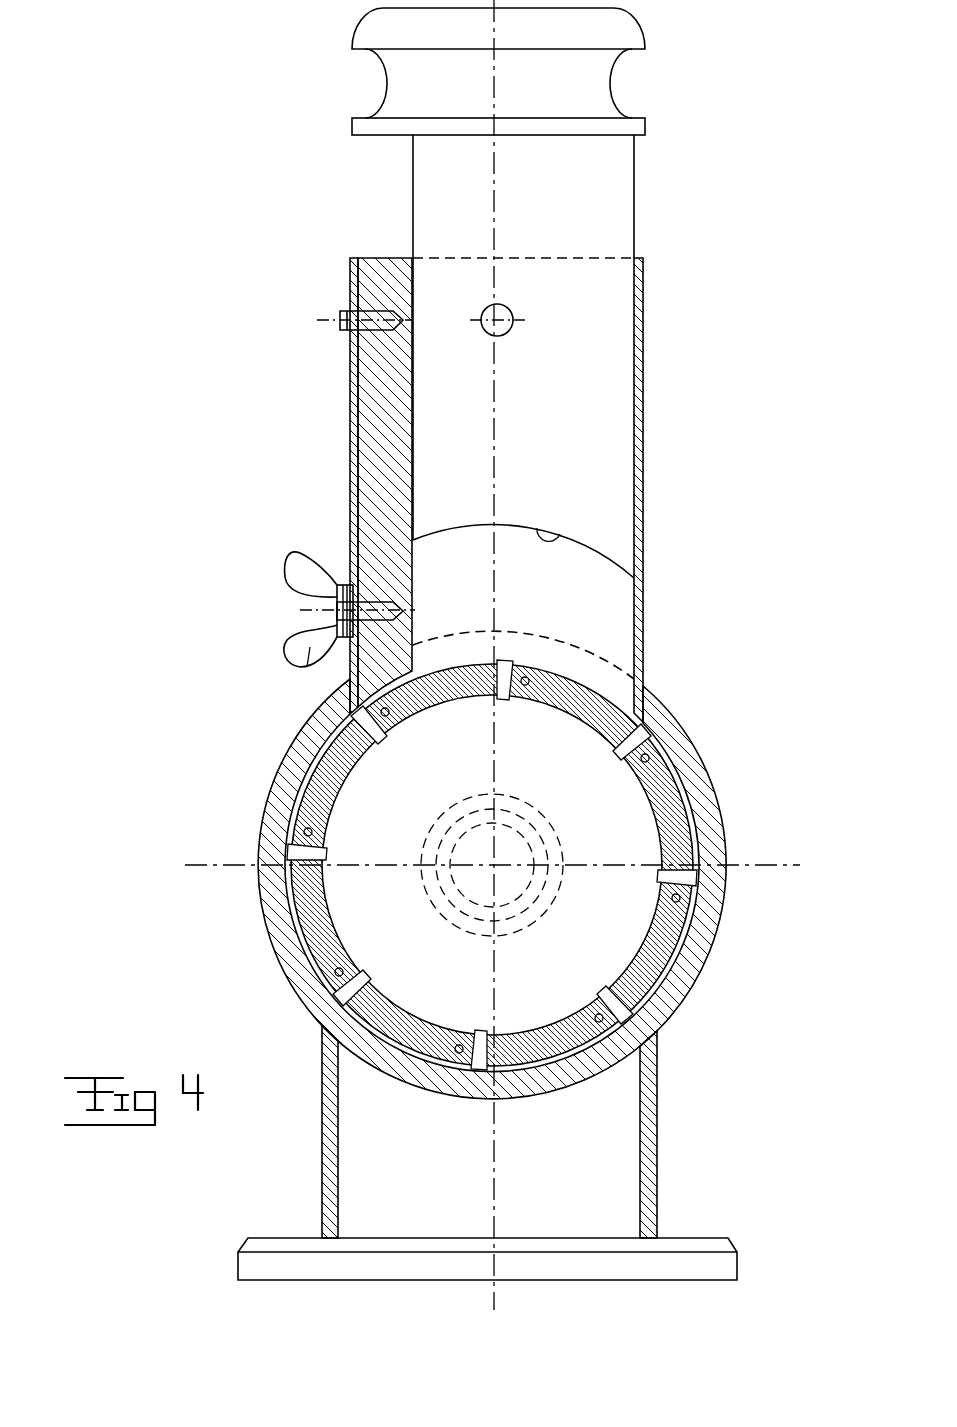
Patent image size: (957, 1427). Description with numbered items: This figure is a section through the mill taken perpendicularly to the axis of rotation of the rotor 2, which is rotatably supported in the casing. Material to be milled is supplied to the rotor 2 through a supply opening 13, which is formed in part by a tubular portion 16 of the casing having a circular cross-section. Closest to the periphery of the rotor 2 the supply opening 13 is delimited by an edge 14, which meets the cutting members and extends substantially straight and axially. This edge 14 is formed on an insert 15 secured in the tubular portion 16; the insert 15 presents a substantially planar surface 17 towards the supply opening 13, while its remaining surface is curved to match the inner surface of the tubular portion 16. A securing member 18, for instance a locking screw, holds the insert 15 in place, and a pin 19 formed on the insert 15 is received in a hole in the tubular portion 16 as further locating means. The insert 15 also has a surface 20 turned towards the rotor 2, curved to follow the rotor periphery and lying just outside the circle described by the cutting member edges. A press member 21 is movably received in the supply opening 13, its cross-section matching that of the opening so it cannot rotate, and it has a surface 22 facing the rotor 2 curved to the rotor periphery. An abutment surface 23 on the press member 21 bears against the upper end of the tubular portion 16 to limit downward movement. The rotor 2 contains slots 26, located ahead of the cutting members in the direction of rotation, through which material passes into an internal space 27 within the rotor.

The rotor 2 is at (492, 843).
The supply opening 13 is at (548, 490).
The edge 14 is at (410, 663).
The insert 15 is at (380, 458).
The tubular portion 16 is at (638, 590).
The planar surface 17 is at (432, 540).
The securing member 18 is at (310, 662).
The pin 19 is at (328, 331).
The surface 20 is at (405, 690).
The press member 21 is at (612, 222).
The surface 22 is at (568, 540).
The abutment surface 23 is at (363, 137).
The slots 26 is at (370, 998).
The internal space 27 is at (533, 865).